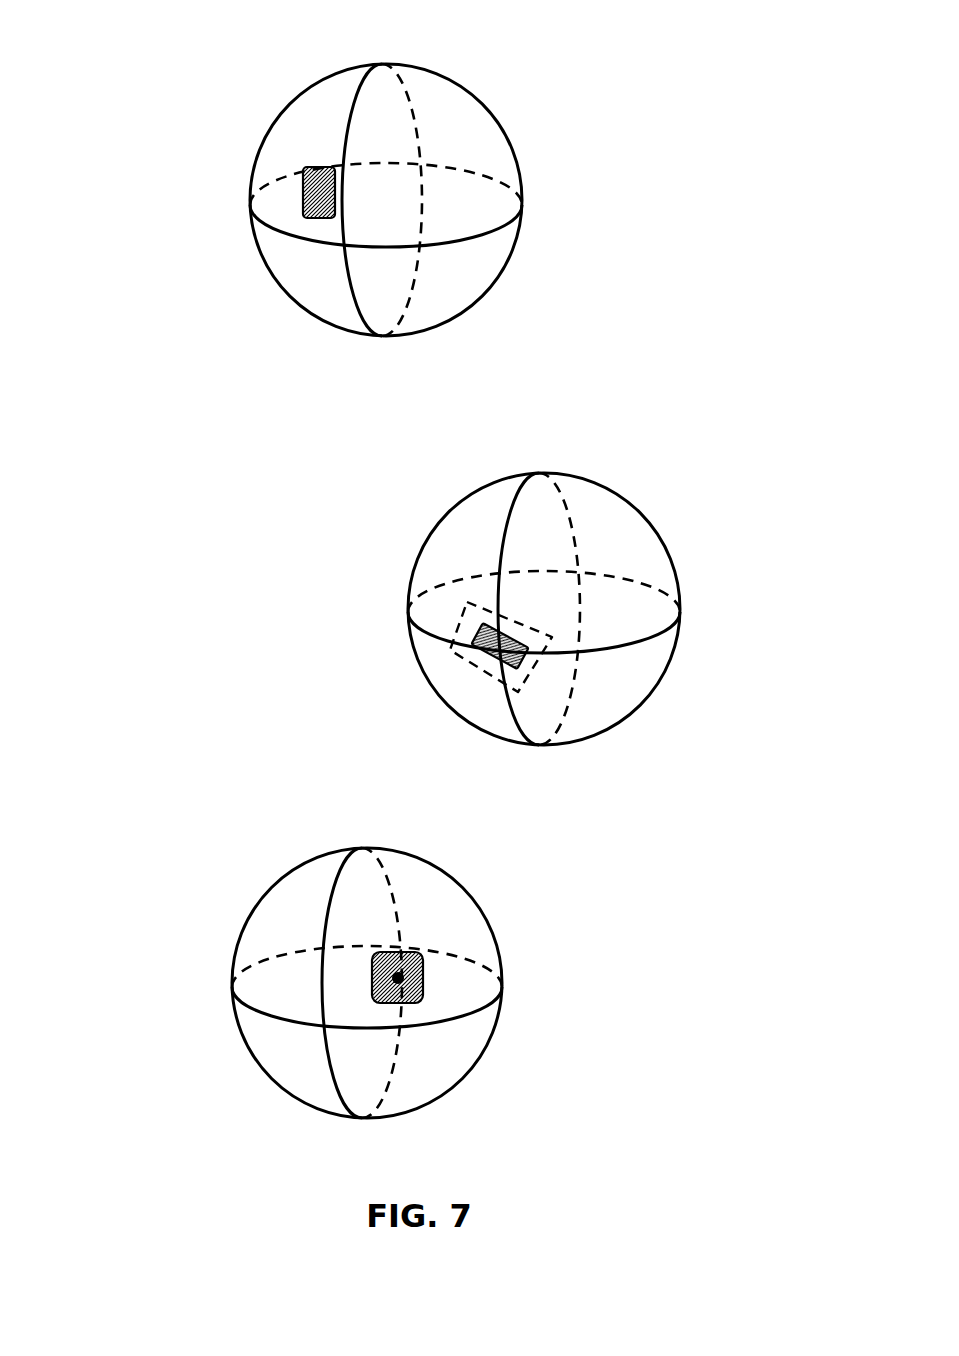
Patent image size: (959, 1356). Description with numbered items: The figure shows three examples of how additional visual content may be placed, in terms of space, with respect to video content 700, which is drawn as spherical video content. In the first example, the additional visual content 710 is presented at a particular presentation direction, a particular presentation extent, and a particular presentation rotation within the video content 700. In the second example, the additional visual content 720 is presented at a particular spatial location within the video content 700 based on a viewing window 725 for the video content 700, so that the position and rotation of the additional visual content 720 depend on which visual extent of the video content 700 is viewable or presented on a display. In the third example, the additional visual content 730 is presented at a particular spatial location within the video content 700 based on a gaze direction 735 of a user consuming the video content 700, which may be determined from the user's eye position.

The video content 700 is at (220, 102).
The additional visual content 710 is at (303, 197).
The additional visual content 720 is at (472, 648).
The viewing window 725 is at (548, 633).
The additional visual content 730 is at (420, 965).
The gaze direction 735 is at (398, 978).